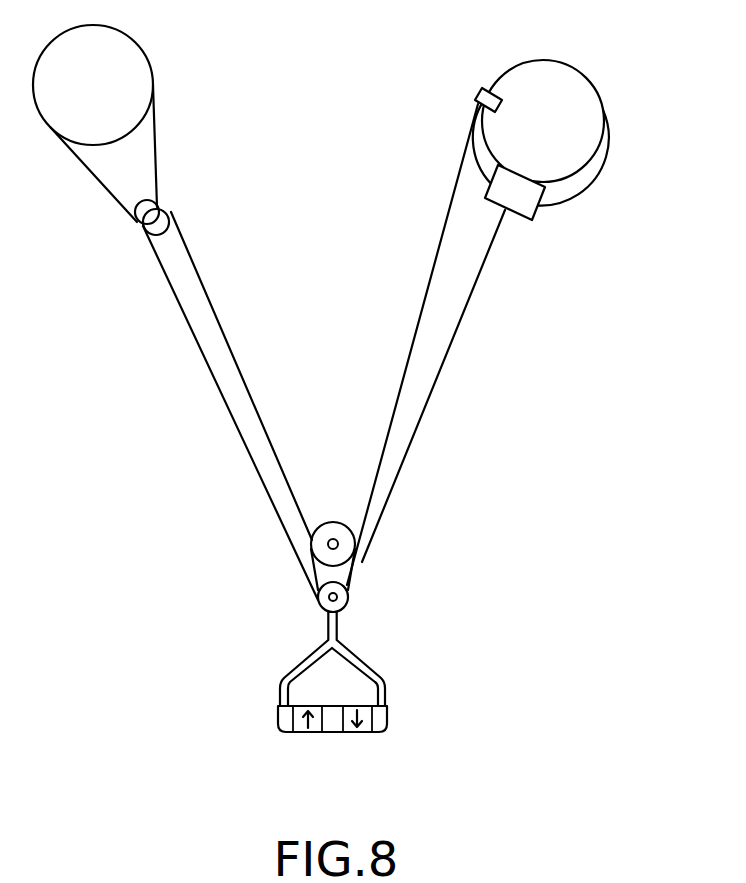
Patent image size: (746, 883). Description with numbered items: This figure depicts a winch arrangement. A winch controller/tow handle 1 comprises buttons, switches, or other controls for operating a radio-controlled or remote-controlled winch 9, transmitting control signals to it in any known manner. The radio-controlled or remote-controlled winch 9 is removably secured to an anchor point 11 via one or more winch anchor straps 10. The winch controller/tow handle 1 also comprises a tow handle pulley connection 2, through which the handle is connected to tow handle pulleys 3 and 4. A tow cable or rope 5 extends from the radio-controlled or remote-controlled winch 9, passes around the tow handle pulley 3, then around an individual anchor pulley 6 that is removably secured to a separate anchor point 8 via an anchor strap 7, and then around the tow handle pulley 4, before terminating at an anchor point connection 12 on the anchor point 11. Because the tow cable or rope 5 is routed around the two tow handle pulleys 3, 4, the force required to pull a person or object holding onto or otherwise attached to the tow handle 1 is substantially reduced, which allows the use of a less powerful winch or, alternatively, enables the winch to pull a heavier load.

The winch controller/tow handle 1 is at (390, 713).
The tow handle pulley connection 2 is at (372, 665).
The tow handle pulley 3 is at (340, 597).
The tow handle pulley 4 is at (345, 540).
The tow cable or rope 5 is at (218, 343).
The individual anchor pulley 6 is at (137, 222).
The anchor strap 7 is at (72, 152).
The anchor point 8 is at (148, 52).
The radio-controlled or remote-controlled winch 9 is at (537, 213).
The winch anchor strap 10 is at (600, 174).
The anchor point 11 is at (604, 105).
The anchor point connection 12 is at (486, 90).